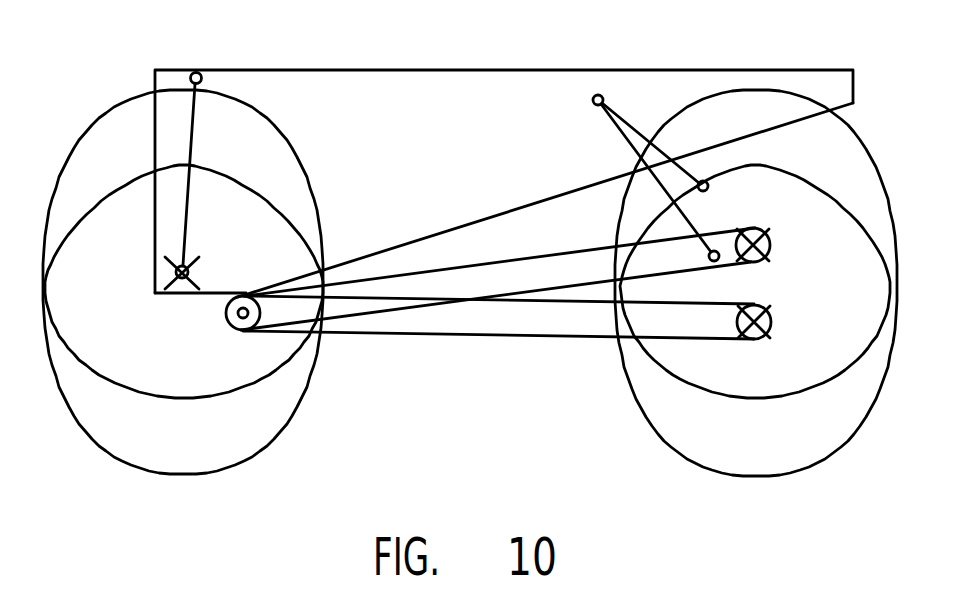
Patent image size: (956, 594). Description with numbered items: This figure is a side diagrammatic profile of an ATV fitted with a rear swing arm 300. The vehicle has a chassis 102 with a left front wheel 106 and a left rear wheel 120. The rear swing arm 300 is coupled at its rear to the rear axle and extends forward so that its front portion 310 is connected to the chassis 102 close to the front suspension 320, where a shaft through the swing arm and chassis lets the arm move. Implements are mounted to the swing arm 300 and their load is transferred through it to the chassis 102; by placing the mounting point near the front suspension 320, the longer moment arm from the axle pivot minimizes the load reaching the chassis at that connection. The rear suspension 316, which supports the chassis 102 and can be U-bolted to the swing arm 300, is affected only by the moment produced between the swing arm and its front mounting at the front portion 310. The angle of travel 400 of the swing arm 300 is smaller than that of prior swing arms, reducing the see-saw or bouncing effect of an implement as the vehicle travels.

The chassis 102 is at (487, 68).
The left front wheel 106 is at (155, 474).
The left rear wheel 120 is at (762, 477).
The rear swing arm 300 is at (515, 336).
The front portion 310 is at (247, 315).
The rear suspension 316 is at (688, 338).
The angle of travel 400 is at (675, 256).
The front suspension 320 is at (190, 123).